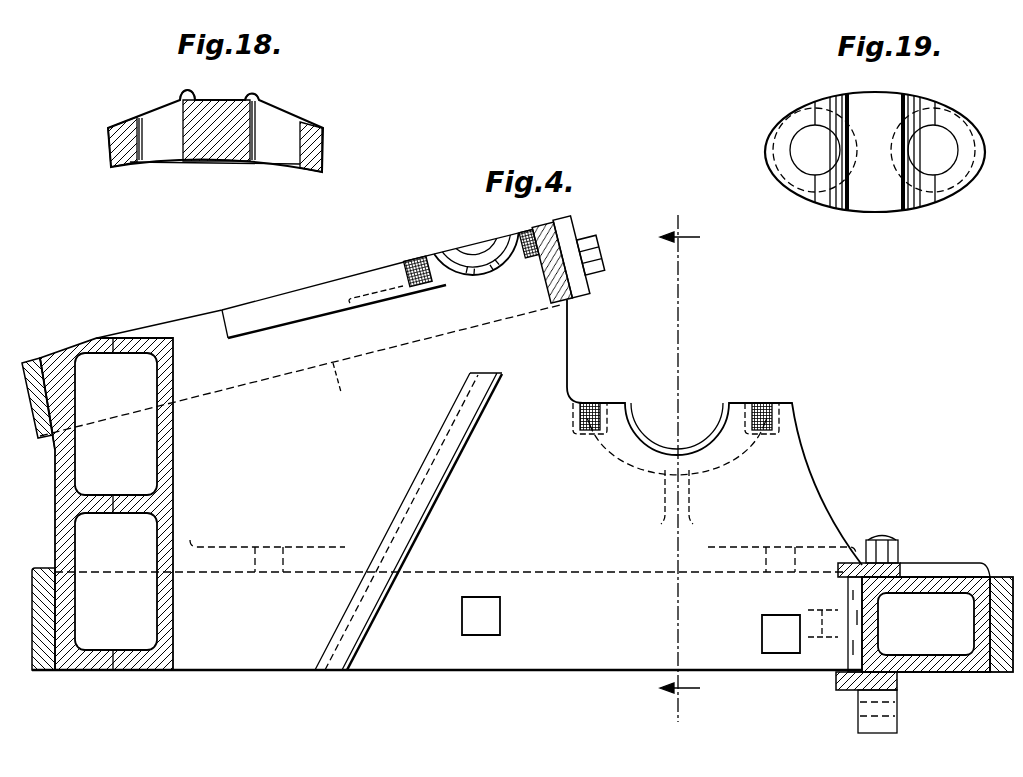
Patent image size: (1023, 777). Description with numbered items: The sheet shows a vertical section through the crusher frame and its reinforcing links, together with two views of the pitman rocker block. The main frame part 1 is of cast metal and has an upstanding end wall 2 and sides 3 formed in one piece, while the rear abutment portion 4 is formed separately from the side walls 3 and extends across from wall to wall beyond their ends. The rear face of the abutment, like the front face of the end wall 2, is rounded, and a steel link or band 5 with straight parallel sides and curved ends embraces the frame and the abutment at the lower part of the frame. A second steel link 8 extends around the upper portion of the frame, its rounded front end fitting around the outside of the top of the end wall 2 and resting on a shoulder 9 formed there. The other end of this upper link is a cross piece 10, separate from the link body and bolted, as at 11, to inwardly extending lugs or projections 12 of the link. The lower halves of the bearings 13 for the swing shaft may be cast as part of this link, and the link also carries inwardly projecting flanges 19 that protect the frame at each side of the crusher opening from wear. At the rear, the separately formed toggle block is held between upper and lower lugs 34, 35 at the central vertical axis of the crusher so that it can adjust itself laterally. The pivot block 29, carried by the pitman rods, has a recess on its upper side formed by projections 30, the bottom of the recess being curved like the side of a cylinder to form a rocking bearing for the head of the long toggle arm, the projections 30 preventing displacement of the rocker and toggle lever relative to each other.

In FIG. 4, the main frame part 1 is at (418, 648).
In FIG. 4, the upstanding end wall 2 is at (158, 462).
In FIG. 4, the sides 3 is at (409, 521).
In FIG. 4, the rear abutment portion 4 is at (930, 578).
In FIG. 4, the steel link or band 5 is at (1002, 577).
In FIG. 4, the second band or steel link 8 is at (38, 362).
In FIG. 4, the shoulder 9 is at (50, 445).
In FIG. 4, the cross piece 10 is at (567, 303).
In FIG. 4, the bolt 11 is at (595, 262).
In FIG. 4, the inwardly extending lugs or projections 12 is at (574, 231).
In FIG. 4, the lower halves of the bearings 13 is at (493, 280).
In FIG. 4, the inwardly projecting flanges 19 is at (301, 300).
In FIG. 18, the pivot block 29 is at (212, 150).
In FIG. 19, the pivot block 29 is at (878, 200).
In FIG. 18, the projections 30 is at (258, 93).
In FIG. 19, the projections 30 is at (912, 205).
In FIG. 4, the upper lug 34 is at (852, 563).
In FIG. 4, the lower lug 35 is at (840, 690).